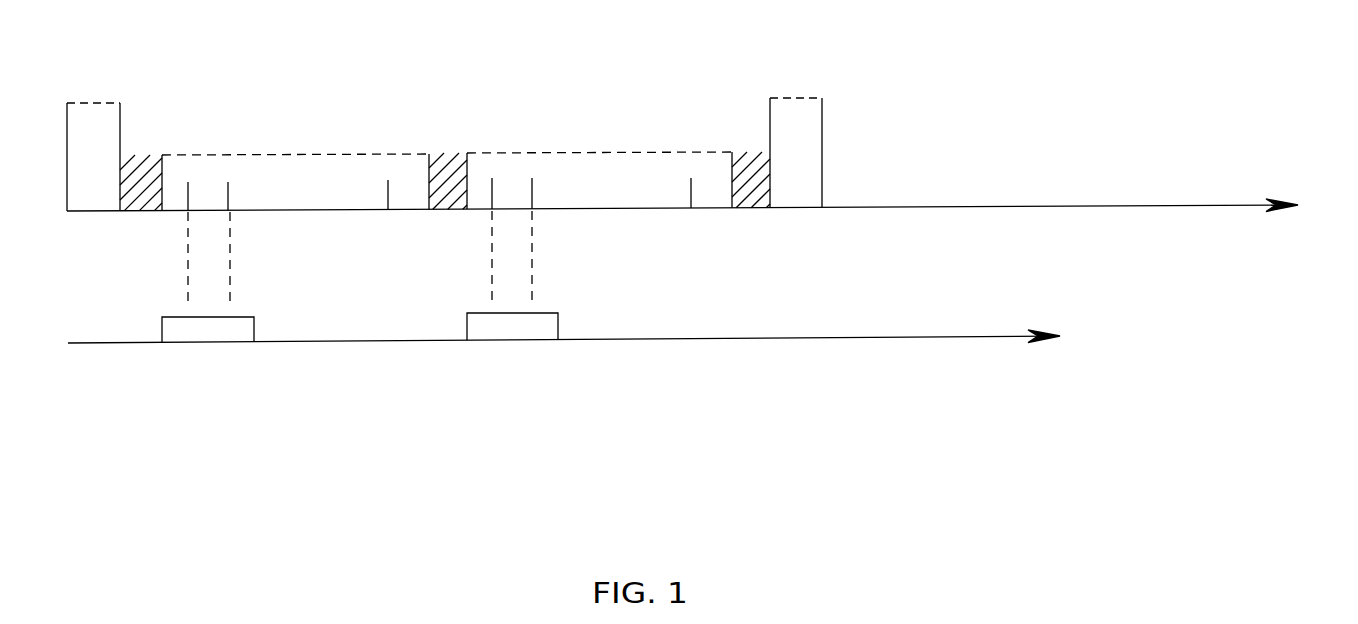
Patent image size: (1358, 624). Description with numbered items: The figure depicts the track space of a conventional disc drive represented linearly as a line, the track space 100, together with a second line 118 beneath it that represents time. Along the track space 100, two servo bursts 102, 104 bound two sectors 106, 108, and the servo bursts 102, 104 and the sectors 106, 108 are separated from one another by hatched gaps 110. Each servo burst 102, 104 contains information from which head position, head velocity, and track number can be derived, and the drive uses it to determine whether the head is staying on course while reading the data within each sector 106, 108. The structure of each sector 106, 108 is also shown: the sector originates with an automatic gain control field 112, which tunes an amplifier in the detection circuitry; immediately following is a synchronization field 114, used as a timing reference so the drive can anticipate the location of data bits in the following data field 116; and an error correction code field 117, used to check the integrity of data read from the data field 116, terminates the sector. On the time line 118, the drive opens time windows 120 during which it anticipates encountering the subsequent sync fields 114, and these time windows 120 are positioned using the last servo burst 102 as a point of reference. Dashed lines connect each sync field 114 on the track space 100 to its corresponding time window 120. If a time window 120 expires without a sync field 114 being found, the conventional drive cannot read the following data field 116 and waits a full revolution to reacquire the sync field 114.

The track space 100 is at (1022, 206).
The servo burst 102 is at (120, 92).
The servo burst 104 is at (770, 86).
The sector 106 is at (162, 143).
The sector 108 is at (467, 142).
The gap 110 is at (133, 212).
The automatic gain control (AGC) field 112 is at (178, 212).
The synchronization (sync) field 114 is at (215, 212).
The data field 116 is at (317, 211).
The error correction code (ECC) field 117 is at (397, 211).
The time line 118 is at (902, 338).
The time window 120 is at (162, 353).